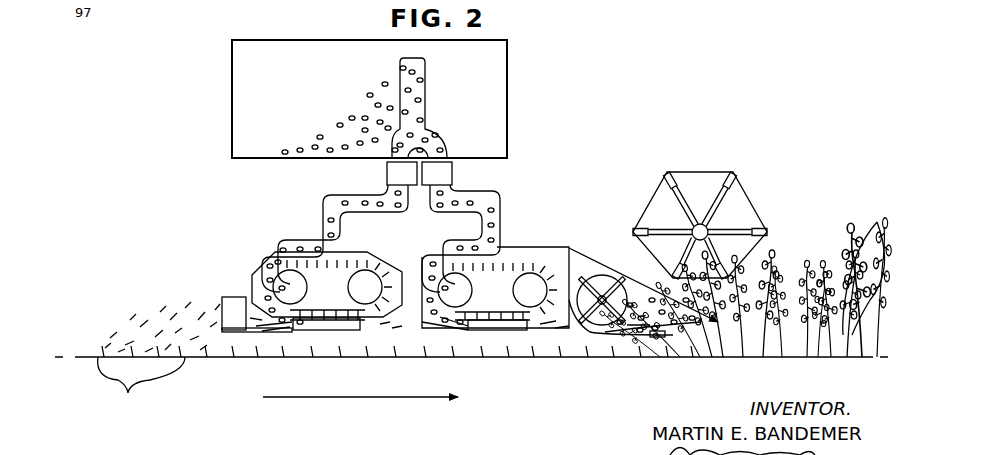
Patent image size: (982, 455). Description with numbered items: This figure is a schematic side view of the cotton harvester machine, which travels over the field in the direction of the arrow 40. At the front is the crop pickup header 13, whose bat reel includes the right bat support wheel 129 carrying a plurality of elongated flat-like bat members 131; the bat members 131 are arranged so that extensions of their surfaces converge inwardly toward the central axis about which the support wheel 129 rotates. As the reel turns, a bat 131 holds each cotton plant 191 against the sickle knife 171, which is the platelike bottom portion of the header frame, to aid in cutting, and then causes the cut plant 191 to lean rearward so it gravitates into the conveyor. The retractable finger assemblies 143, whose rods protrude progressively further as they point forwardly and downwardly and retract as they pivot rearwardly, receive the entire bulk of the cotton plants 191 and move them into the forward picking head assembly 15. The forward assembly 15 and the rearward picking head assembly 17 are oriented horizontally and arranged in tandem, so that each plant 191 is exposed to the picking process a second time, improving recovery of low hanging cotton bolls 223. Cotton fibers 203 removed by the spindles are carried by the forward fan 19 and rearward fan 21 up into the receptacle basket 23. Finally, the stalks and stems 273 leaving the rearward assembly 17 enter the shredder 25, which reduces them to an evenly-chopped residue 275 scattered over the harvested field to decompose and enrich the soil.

The crop pickup header 13 is at (711, 152).
The forward picking head assembly 15 is at (532, 285).
The rearward picking head assembly 17 is at (265, 275).
The forward fan 19 is at (452, 174).
The rearward fan 21 is at (387, 174).
The receptacle basket 23 is at (296, 83).
The shredder 25 is at (232, 300).
The direction arrow 40 is at (347, 397).
The right bat support wheel 129 is at (748, 203).
The bat members 131 is at (667, 178).
The retractable finger assemblies 143 is at (600, 276).
The sickle knife 171 is at (656, 340).
The cotton plant 191 is at (810, 350).
The cotton fibers 203 is at (323, 135).
The cotton bolls 223 is at (840, 335).
The stalks and stems 273 is at (275, 322).
The evenly-chopped residue 275 is at (170, 327).